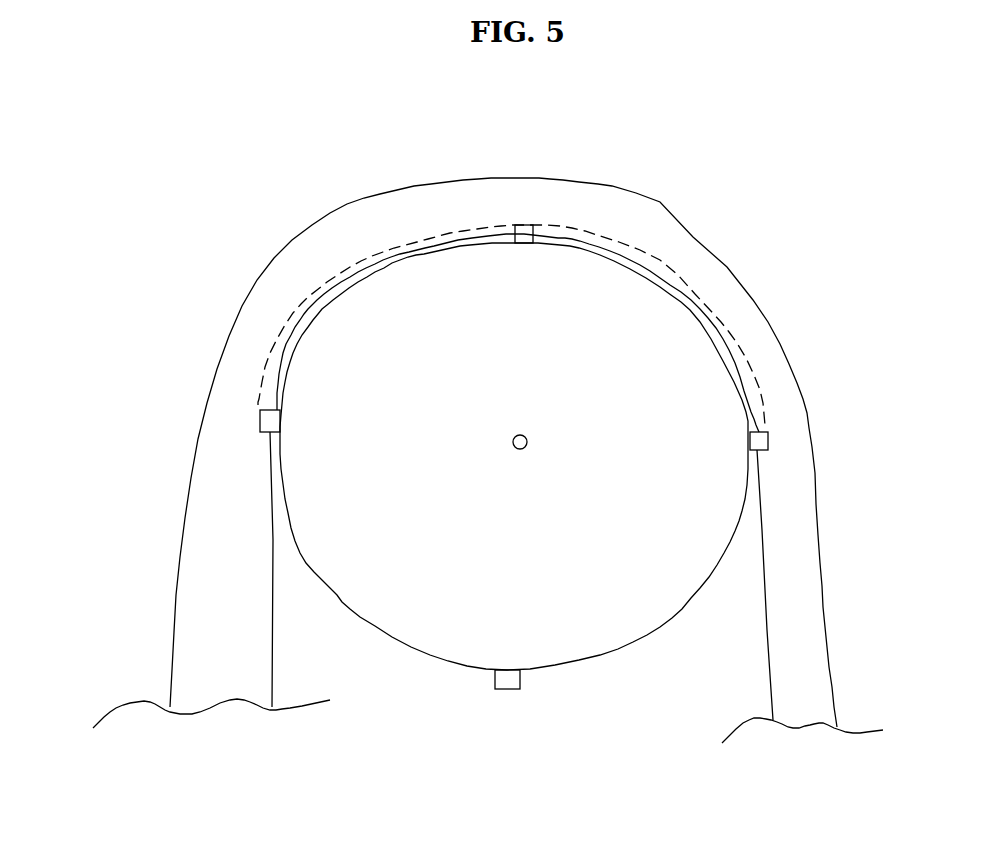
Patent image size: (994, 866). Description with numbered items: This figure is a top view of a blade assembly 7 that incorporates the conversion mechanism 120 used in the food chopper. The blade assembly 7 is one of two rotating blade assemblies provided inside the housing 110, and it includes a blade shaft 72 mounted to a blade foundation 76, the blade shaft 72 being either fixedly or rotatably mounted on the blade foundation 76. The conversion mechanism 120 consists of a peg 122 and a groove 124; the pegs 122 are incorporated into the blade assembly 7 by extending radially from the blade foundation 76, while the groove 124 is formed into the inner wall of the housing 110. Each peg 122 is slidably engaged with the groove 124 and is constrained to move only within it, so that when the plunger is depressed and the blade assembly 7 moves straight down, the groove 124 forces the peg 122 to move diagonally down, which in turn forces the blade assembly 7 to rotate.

The blade assembly 7 is at (222, 167).
The housing 110 is at (563, 177).
The conversion mechanism 120 is at (152, 357).
The peg 122 is at (84, 426).
The groove 124 is at (307, 307).
The blade shaft 72 is at (514, 433).
The blade foundation 76 is at (374, 510).